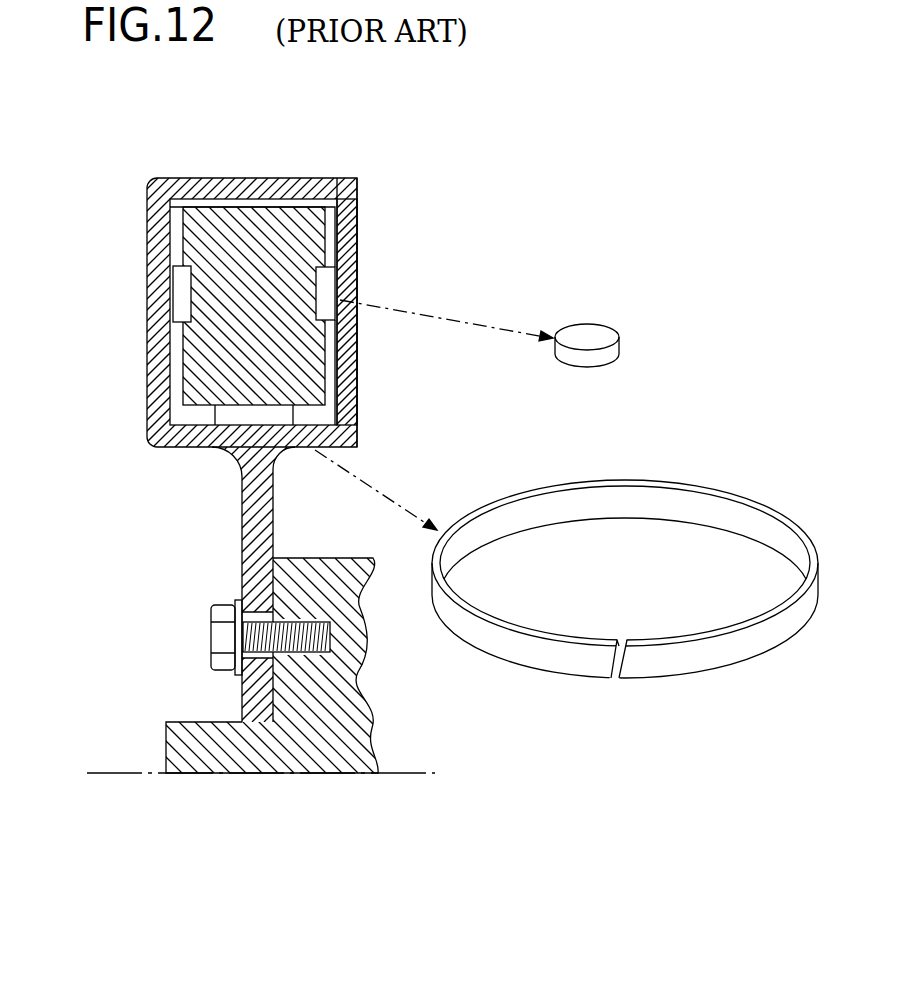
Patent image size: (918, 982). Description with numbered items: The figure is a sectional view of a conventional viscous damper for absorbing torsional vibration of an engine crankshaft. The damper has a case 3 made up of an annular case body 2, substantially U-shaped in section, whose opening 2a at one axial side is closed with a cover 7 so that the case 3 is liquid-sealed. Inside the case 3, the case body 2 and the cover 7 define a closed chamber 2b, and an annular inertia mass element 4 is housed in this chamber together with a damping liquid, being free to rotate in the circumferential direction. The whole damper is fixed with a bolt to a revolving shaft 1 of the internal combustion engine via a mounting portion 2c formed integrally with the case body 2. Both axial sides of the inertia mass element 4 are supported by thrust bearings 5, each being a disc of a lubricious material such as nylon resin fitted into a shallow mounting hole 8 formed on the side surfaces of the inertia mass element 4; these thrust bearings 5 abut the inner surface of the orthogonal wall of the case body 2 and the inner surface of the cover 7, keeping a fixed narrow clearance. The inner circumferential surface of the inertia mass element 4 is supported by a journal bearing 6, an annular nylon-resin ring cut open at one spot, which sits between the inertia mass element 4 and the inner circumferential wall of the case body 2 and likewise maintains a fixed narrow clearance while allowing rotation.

The revolving shaft 1 is at (330, 740).
The case body 2 is at (157, 370).
The opening 2a is at (357, 210).
The closed chamber 2b is at (177, 210).
The mounting portion 2c is at (253, 557).
The case 3 is at (310, 278).
The inertia mass element 4 is at (258, 218).
The thrust bearing 5 is at (182, 289).
The journal bearing 6 is at (218, 450).
The cover 7 is at (346, 406).
The mounting hole 8 is at (357, 336).